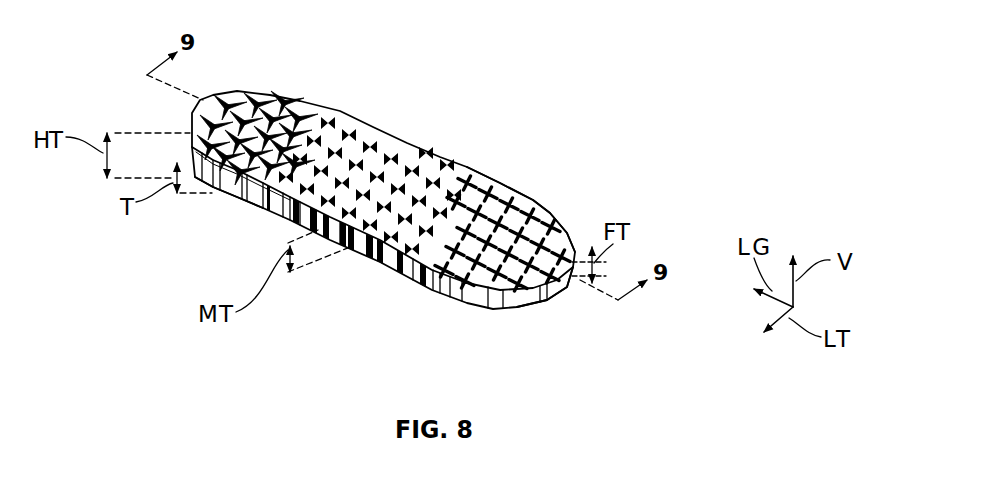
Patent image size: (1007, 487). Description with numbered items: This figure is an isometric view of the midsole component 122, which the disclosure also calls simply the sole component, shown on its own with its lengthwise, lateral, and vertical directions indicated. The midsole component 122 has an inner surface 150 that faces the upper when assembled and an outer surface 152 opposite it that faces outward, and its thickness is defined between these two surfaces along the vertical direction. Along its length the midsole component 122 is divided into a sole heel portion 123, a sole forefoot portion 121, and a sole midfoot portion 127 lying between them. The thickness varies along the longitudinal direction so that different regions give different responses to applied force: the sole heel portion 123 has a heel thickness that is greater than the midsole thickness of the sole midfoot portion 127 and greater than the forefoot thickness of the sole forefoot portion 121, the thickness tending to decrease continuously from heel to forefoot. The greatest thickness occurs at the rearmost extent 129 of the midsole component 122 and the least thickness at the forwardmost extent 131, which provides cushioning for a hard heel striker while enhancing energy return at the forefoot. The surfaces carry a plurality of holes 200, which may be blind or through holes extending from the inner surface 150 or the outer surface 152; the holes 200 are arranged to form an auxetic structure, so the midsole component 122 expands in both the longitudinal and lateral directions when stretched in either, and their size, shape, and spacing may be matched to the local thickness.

The sole forefoot portion 121 is at (534, 305).
The midsole component 122 is at (555, 213).
The sole heel portion 123 is at (220, 203).
The sole midfoot portion 127 is at (351, 253).
The rearmost extent 129 is at (207, 93).
The forwardmost extent 131 is at (569, 285).
The inner surface 150 is at (251, 91).
The outer surface 152 is at (255, 212).
The holes 200 is at (299, 116).